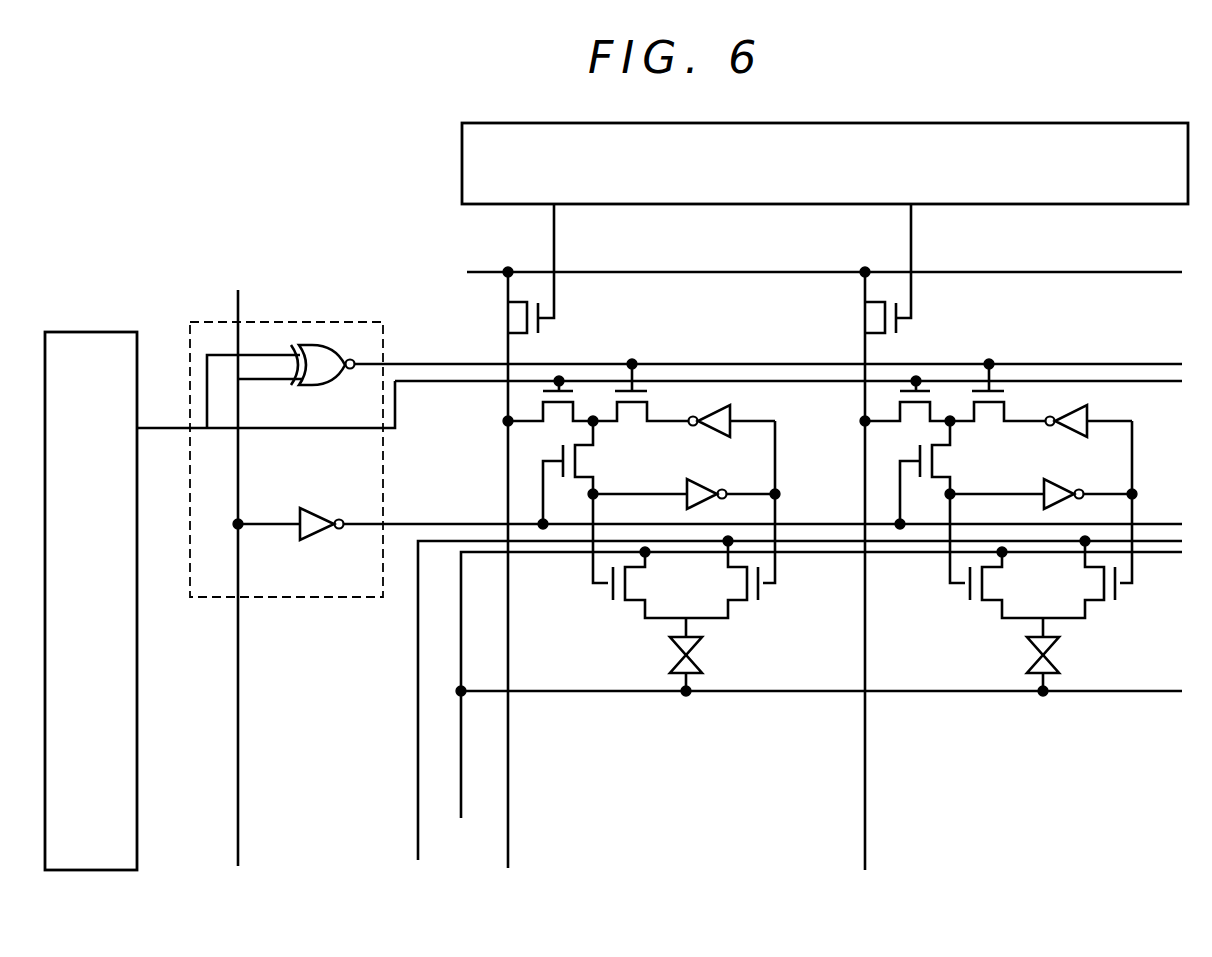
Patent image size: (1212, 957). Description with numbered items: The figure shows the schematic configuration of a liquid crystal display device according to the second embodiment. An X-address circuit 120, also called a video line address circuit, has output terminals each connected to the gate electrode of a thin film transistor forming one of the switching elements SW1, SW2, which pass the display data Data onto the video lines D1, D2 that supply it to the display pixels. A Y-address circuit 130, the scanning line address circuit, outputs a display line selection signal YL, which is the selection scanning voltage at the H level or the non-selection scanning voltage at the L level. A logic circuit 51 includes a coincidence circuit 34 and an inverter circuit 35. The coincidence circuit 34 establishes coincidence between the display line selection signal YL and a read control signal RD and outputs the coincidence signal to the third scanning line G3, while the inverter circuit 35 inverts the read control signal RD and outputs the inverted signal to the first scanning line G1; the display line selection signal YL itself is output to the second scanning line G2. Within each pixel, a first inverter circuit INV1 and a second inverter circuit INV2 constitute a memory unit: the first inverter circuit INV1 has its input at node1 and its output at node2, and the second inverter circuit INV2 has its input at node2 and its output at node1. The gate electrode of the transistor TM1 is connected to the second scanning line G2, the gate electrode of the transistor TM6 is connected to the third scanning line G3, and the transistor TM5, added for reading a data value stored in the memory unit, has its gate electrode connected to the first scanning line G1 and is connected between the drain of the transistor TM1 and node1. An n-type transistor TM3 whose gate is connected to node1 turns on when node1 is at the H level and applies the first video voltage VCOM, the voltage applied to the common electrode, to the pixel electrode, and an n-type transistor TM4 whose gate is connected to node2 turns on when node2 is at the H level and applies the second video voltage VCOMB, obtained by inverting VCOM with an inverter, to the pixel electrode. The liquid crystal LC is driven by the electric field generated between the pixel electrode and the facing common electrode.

The X-address circuit 120 is at (977, 120).
The Y-address circuit 130 is at (100, 329).
The logic circuit 51 is at (329, 322).
The coincidence circuit 34 is at (330, 388).
The inverter circuit 35 is at (314, 544).
The read control signal RD is at (243, 562).
The display line selection signal YL is at (176, 434).
The display data Data is at (1028, 270).
The first scanning line G1 is at (400, 514).
The second scanning line G2 is at (412, 386).
The third scanning line G3 is at (432, 363).
The video line D1 is at (510, 790).
The video line D2 is at (866, 790).
The switching element SW1 is at (506, 318).
The switching element SW2 is at (864, 318).
The transistor TM1 is at (953, 471).
The n-type transistor TM3 is at (606, 588).
The n-type transistor TM4 is at (764, 588).
The transistor TM5 is at (582, 460).
The transistor TM6 is at (632, 399).
The first inverter circuit INV1 is at (712, 486).
The second inverter circuit INV2 is at (734, 419).
The liquid crystal LC is at (702, 652).
The node 1 node1 is at (1014, 482).
The node 2 node2 is at (1099, 502).
The voltage VCOM is at (803, 704).
The voltage VCOMB is at (765, 715).